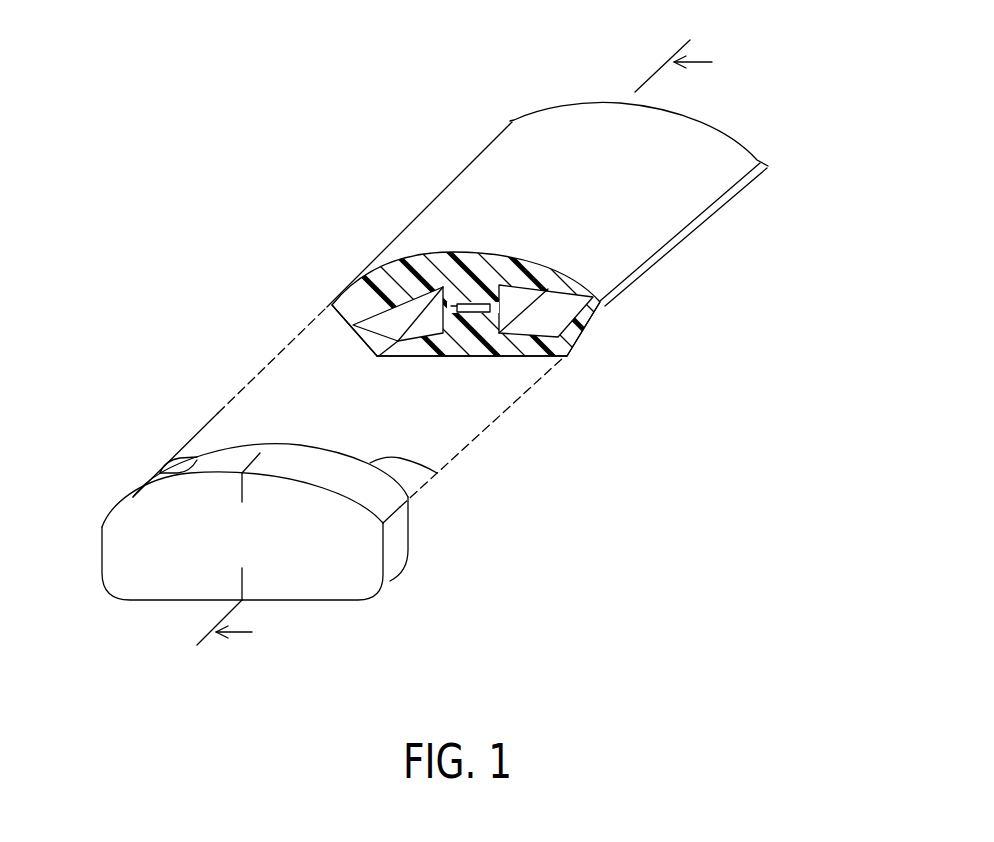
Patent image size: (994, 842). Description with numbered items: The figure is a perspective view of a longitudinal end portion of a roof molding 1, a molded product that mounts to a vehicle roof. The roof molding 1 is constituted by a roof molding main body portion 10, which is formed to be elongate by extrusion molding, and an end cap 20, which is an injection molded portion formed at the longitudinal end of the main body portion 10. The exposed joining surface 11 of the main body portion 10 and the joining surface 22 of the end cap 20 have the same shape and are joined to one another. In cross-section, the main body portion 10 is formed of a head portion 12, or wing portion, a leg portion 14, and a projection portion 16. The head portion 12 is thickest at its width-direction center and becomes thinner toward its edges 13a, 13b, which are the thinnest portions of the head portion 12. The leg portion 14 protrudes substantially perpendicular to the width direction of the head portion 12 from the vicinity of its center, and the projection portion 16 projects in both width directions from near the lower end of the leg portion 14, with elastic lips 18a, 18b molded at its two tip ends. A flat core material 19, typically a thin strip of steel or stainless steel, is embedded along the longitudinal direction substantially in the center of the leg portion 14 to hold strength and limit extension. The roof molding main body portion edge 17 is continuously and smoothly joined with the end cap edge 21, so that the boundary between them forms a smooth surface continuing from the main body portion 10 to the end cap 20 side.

The roof molding 1 is at (399, 158).
The roof molding main body portion 10 is at (712, 184).
The exposed joining surface 11 is at (437, 473).
The head portion 12 is at (472, 262).
The edge of the head portion 13a is at (607, 307).
The edge of the head portion 13b is at (350, 288).
The leg portion 14 is at (503, 305).
The projection portion 16 is at (475, 348).
The roof molding main body portion edge 17 is at (673, 247).
The elastic lip 18a is at (577, 345).
The elastic lip 18b is at (353, 326).
The core material 19 is at (455, 303).
The end cap 20 is at (322, 583).
The end cap edge 21 is at (395, 520).
The joining surface 22 is at (163, 472).